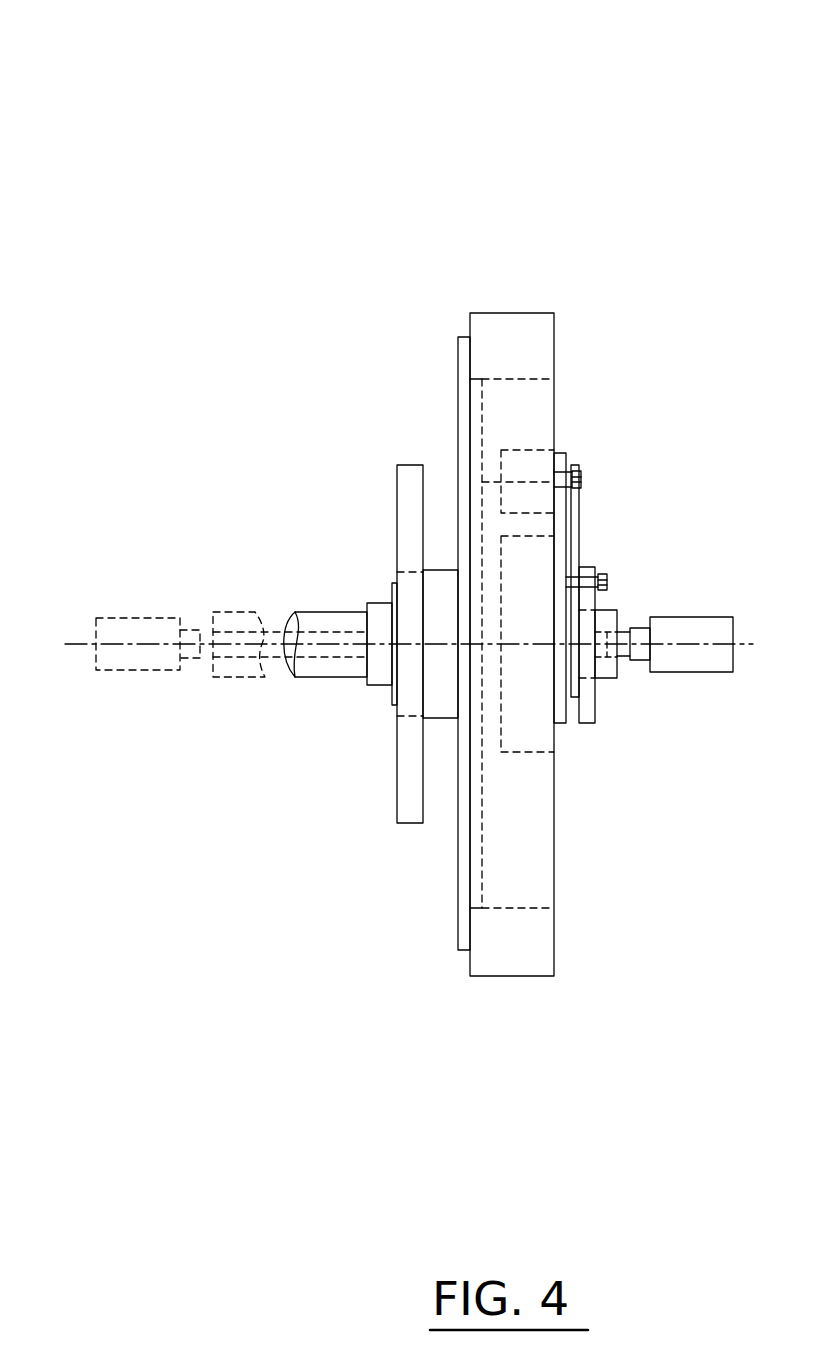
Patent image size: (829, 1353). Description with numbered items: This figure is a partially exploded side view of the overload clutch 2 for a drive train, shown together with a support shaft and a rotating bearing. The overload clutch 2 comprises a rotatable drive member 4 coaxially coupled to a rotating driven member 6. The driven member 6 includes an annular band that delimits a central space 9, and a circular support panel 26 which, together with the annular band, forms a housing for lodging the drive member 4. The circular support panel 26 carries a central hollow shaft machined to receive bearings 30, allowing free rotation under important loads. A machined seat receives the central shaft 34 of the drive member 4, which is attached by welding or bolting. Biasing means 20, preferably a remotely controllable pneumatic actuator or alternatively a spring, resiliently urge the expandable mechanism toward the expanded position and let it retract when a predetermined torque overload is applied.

The overload clutch 2 is at (388, 136).
The drive member 4 is at (598, 567).
The driven member 6 is at (531, 315).
The central space 9 is at (535, 842).
The biasing means 20 is at (443, 720).
The circular support panel 26 is at (456, 362).
The bearings 30 is at (367, 687).
The central shaft 34 is at (620, 611).